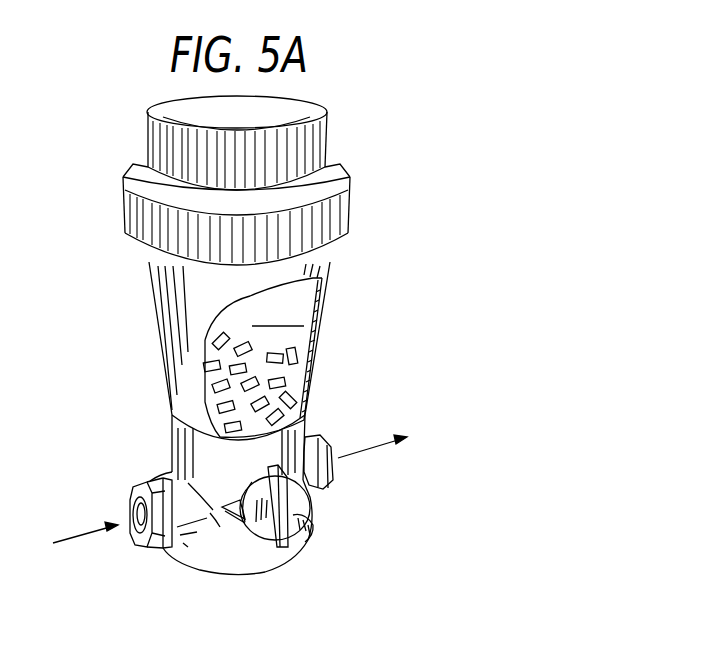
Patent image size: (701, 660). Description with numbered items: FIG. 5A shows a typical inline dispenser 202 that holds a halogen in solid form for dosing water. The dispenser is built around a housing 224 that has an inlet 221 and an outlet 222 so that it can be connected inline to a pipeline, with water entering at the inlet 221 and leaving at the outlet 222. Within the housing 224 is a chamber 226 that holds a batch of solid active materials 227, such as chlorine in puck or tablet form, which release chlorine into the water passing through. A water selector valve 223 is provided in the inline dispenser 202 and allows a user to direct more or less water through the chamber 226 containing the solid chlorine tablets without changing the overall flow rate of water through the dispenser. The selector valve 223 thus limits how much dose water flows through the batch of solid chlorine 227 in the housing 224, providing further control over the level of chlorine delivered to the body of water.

The inline dispenser 202 is at (424, 160).
The inlet 221 is at (133, 541).
The outlet 222 is at (335, 473).
The water selector valve 223 is at (290, 547).
The housing 224 is at (332, 258).
The chamber 226 is at (315, 138).
The solid active materials 227 is at (287, 378).